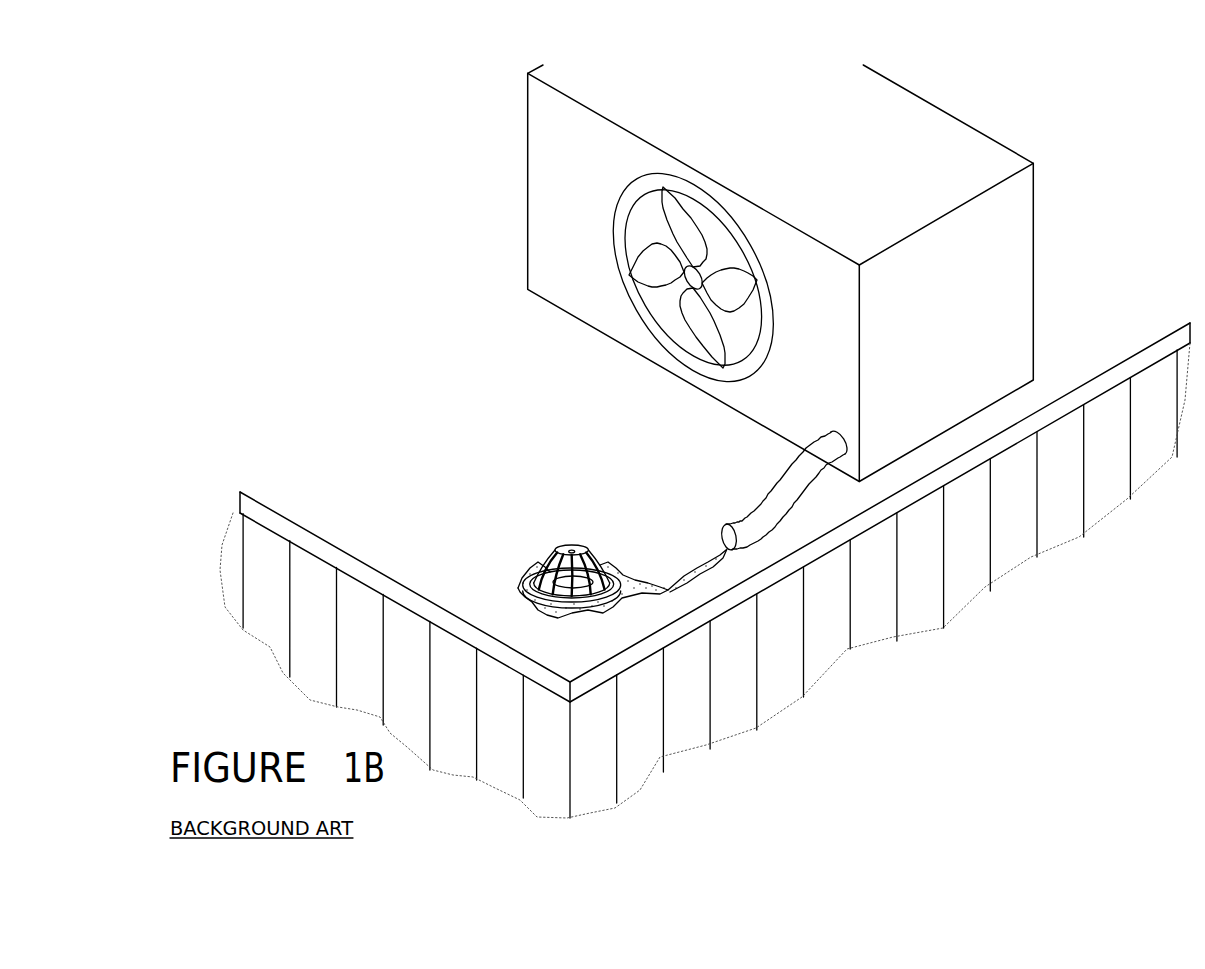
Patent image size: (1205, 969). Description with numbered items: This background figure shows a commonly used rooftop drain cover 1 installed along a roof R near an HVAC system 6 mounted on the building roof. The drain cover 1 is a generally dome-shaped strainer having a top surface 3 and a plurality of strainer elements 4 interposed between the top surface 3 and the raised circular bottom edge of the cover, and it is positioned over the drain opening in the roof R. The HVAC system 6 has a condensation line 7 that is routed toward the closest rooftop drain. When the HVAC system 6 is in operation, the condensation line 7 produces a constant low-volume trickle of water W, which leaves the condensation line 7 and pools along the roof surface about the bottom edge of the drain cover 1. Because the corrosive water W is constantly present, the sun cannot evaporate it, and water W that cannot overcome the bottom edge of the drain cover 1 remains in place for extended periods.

The drain cover 1 is at (540, 536).
The top surface 3 is at (560, 547).
The strainer elements 4 is at (532, 570).
The HVAC system 6 is at (936, 333).
The condensation line 7 is at (770, 502).
The water W is at (667, 593).
The roof R is at (293, 433).